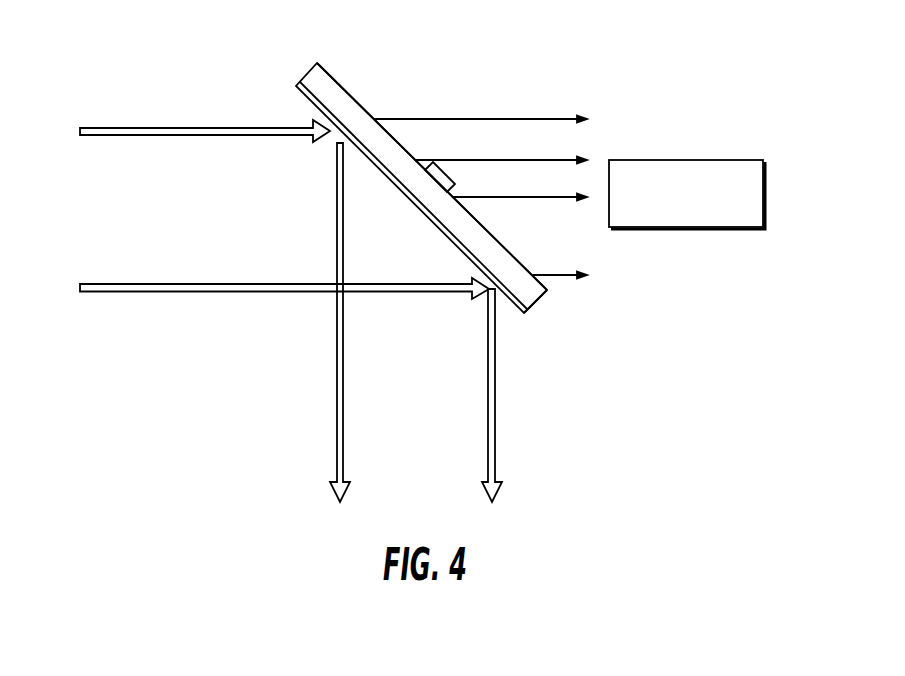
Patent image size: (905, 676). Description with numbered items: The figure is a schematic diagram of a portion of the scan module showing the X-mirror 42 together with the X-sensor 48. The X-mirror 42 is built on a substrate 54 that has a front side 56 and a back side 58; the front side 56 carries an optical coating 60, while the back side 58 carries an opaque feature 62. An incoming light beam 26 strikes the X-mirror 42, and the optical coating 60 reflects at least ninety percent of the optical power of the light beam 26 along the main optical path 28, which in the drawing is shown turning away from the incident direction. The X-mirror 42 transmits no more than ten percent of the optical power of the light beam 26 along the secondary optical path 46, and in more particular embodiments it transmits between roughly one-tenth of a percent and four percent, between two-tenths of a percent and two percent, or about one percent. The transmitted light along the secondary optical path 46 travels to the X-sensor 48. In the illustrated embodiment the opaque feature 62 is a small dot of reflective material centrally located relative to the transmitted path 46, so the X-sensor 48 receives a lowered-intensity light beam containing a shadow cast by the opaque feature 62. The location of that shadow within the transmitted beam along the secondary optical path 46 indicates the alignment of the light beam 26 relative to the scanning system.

The light beam 26 is at (163, 135).
The main optical path 28 is at (139, 128).
The X-mirror 42 is at (401, 200).
The secondary optical path 46 is at (483, 119).
The X-sensor 48 is at (685, 228).
The substrate 54 is at (335, 88).
The front side 56 is at (300, 91).
The back side 58 is at (367, 108).
The optical coating 60 is at (515, 306).
The opaque feature 62 is at (445, 160).